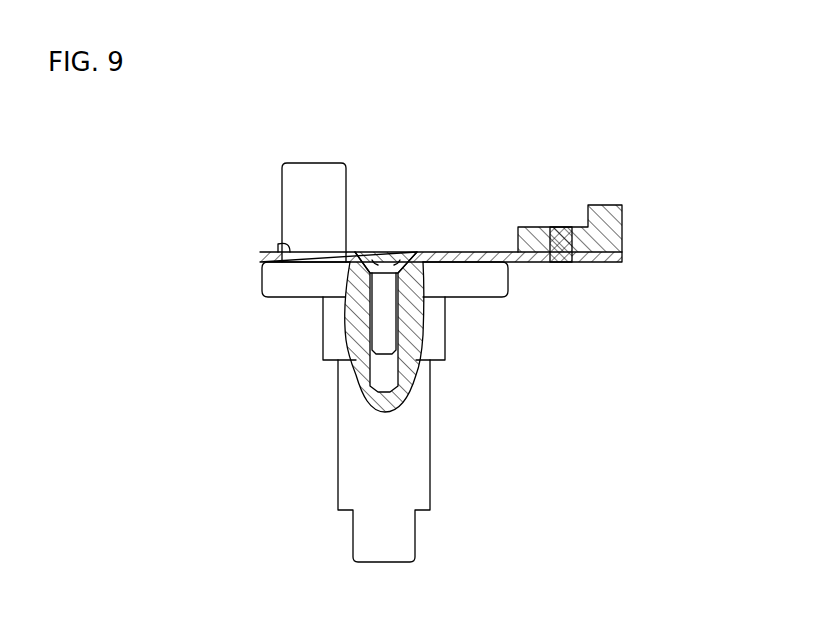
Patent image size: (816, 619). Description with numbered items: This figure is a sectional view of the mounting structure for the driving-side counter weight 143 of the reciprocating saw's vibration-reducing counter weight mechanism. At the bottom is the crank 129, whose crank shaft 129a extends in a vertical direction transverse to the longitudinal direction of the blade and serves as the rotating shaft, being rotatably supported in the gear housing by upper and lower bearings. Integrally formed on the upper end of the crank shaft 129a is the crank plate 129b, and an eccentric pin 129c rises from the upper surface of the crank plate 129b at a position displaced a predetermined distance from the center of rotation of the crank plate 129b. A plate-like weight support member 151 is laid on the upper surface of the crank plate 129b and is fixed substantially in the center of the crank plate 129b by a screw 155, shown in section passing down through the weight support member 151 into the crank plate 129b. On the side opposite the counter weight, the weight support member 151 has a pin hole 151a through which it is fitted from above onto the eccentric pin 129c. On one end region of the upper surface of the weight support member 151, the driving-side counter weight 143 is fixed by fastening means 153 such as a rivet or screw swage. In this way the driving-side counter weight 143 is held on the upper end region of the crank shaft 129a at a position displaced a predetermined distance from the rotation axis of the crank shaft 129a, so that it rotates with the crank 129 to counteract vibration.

The crank 129 is at (337, 426).
The crank shaft 129a is at (347, 471).
The crank plate 129b is at (266, 297).
The eccentric pin 129c is at (314, 176).
The driving-side counter weight 143 is at (603, 213).
The weight support member 151 is at (456, 252).
The pin hole 151a is at (285, 248).
The fastening means 153 is at (557, 227).
The screw 155 is at (383, 257).